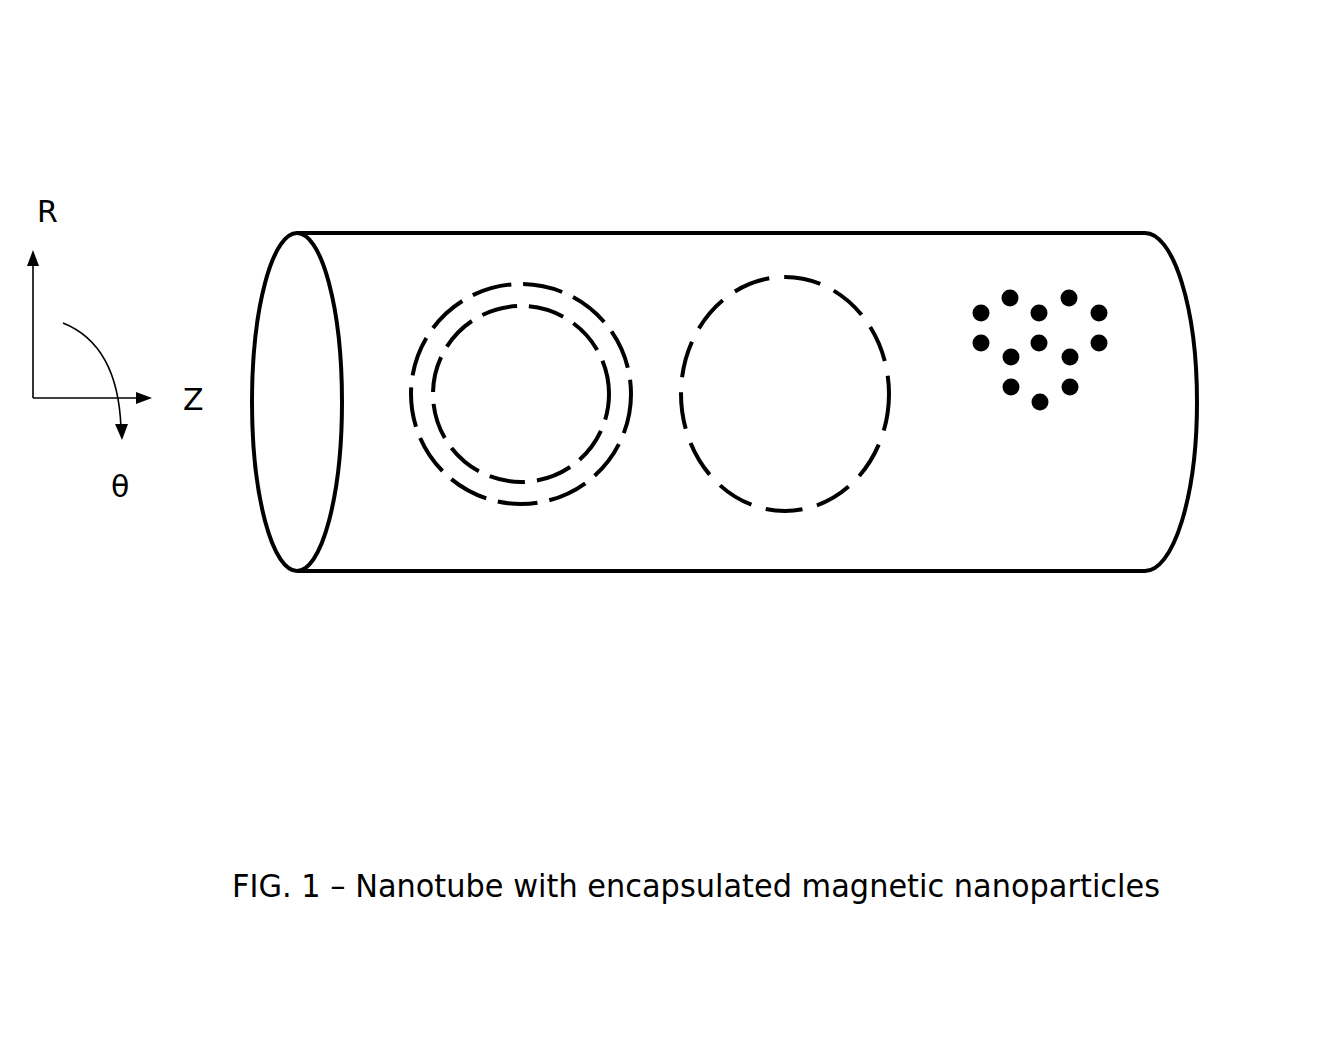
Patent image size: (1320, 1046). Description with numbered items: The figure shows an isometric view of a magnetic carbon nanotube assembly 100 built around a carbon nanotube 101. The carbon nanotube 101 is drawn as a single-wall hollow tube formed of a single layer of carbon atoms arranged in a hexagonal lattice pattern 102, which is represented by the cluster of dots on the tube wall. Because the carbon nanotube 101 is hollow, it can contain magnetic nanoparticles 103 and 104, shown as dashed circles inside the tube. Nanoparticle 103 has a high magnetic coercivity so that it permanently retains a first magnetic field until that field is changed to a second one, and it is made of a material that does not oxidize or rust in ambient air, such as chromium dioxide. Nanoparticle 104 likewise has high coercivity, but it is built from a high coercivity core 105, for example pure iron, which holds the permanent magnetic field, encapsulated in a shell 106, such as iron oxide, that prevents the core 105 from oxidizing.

The magnetic carbon nanotube assembly 100 is at (858, 190).
The carbon nanotube 101 is at (1113, 229).
The hexagonal lattice pattern 102 is at (1105, 309).
The nanoparticle 103 is at (798, 483).
The nanoparticle 104 is at (472, 500).
The high coercivity core 105 is at (561, 418).
The shell 106 is at (531, 492).